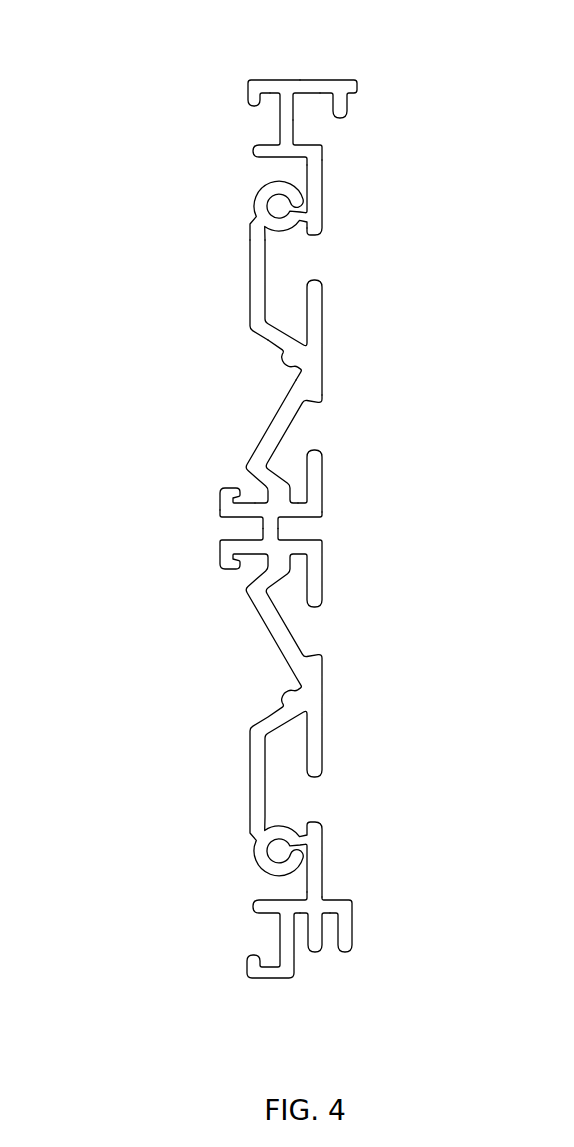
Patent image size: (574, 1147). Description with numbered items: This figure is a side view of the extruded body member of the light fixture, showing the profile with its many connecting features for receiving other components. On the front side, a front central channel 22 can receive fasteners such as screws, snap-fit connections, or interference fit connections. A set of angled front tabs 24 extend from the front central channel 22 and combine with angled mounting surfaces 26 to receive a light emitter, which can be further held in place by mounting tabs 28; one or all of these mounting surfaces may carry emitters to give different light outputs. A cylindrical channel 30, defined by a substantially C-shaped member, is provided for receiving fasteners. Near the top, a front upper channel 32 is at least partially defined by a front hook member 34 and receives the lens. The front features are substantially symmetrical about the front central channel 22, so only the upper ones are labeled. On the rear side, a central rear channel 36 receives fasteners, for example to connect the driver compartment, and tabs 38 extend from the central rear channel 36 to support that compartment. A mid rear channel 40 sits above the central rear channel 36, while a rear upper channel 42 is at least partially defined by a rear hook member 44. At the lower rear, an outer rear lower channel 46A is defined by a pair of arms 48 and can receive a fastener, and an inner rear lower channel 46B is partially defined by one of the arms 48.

The front central channel 22 is at (228, 535).
The angled front tabs 24 is at (225, 498).
The angled mounting surfaces 26 is at (265, 440).
The mounting tabs 28 is at (290, 365).
The cylindrical channel 30 is at (275, 215).
The front upper channel 32 is at (277, 133).
The front hook member 34 is at (252, 100).
The central rear channel 36 is at (313, 530).
The tabs 38 is at (323, 482).
The mid rear channel 40 is at (300, 250).
The rear upper channel 42 is at (317, 120).
The rear hook member 44 is at (345, 112).
The outer rear lower channel 46A is at (332, 935).
The inner rear lower channel 46B is at (298, 928).
The arms 48 is at (352, 942).